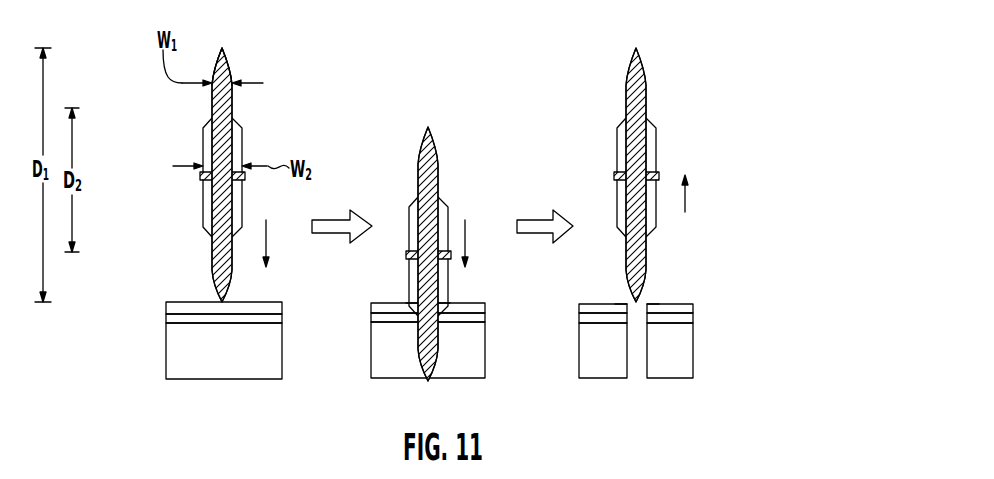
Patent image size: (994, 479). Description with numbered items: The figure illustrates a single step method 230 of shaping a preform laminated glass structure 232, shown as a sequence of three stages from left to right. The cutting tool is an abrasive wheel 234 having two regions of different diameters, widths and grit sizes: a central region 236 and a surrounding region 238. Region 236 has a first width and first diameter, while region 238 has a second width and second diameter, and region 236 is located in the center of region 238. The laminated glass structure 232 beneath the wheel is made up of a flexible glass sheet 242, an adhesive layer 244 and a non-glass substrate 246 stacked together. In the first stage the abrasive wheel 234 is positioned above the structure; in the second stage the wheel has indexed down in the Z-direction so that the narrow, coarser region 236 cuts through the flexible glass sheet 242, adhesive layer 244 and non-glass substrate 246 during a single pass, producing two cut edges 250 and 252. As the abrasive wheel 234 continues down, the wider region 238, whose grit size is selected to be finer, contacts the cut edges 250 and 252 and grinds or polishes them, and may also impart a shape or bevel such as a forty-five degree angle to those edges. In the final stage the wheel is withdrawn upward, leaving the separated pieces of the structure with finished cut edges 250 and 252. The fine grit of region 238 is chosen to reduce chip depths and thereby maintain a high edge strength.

The single step method 230 is at (465, 201).
The preform laminated glass structure 232 is at (433, 337).
The abrasive wheel 234 is at (250, 107).
The region 236 is at (212, 97).
The region 238 is at (240, 146).
The flexible glass sheet 242 is at (267, 307).
The adhesive layer 244 is at (171, 320).
The non-glass substrate 246 is at (194, 370).
The cut edge 250 is at (406, 302).
The cut edge 252 is at (445, 300).